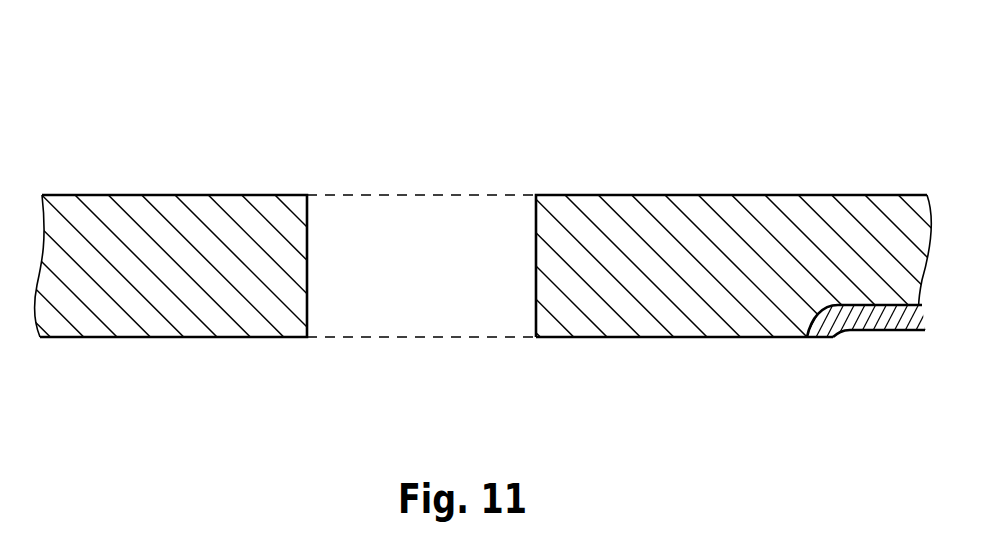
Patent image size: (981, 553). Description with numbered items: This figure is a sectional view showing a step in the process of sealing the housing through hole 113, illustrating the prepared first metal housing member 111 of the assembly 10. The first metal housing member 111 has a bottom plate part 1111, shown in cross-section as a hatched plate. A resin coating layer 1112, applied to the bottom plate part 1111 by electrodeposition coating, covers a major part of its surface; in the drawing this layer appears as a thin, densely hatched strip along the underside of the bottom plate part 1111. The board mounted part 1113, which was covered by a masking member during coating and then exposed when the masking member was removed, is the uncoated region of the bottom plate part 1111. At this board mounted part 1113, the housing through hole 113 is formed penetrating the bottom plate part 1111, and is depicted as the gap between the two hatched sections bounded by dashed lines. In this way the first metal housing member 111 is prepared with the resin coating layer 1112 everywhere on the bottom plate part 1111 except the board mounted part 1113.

The valve / assembly 10 is at (93, 58).
The first metal housing member 111 is at (687, 262).
The housing through hole 113 is at (403, 227).
The bottom plate part 1111 is at (768, 217).
The resin coating layer 1112 is at (889, 323).
The board mounted part 1113 is at (672, 340).